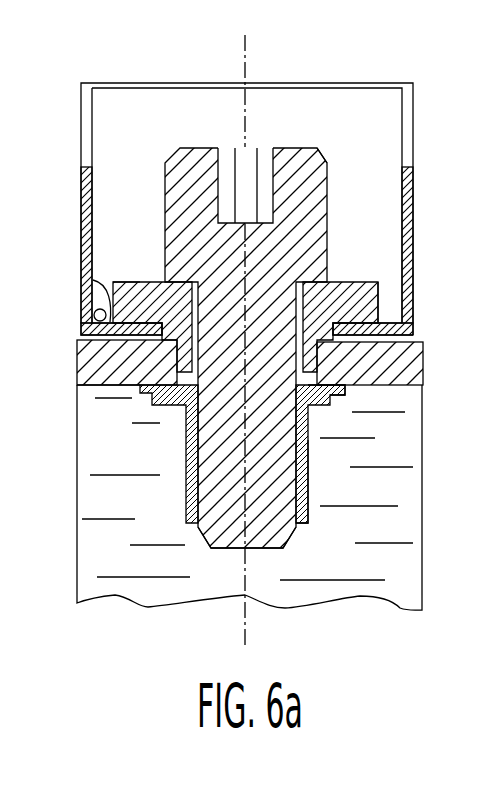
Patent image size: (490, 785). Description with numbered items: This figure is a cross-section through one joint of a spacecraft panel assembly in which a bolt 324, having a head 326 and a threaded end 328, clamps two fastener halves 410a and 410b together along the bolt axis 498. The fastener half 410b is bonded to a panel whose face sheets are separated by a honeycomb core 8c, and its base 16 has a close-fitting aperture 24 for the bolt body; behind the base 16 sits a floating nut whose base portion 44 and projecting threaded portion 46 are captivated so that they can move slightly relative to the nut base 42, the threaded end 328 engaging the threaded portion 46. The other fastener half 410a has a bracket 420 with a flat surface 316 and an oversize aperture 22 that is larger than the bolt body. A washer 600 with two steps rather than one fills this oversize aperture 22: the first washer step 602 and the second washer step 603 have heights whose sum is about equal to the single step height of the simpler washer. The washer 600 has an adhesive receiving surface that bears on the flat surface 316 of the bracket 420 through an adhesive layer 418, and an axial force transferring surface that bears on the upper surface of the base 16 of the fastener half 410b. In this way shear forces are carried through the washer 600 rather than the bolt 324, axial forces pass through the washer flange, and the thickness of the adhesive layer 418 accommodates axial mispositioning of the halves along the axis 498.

The honeycomb core 8c is at (143, 600).
The base 16 is at (105, 388).
The aperture 22 is at (160, 278).
The aperture 24 is at (183, 405).
The base 42 is at (343, 388).
The base portion 44 is at (307, 400).
The projecting threaded portion 46 is at (313, 478).
The flat surface 316 is at (93, 280).
The bolt 324 is at (165, 185).
The head 326 is at (300, 157).
The threaded end 328 is at (286, 533).
The fastener half 410a is at (402, 123).
The fastener half 410b is at (77, 354).
The adhesive layer 418 is at (118, 282).
The bracket 420 is at (94, 316).
The axis 498 is at (243, 58).
The washer 600 is at (383, 300).
The washer step 602 is at (347, 320).
The washer step 603 is at (313, 362).